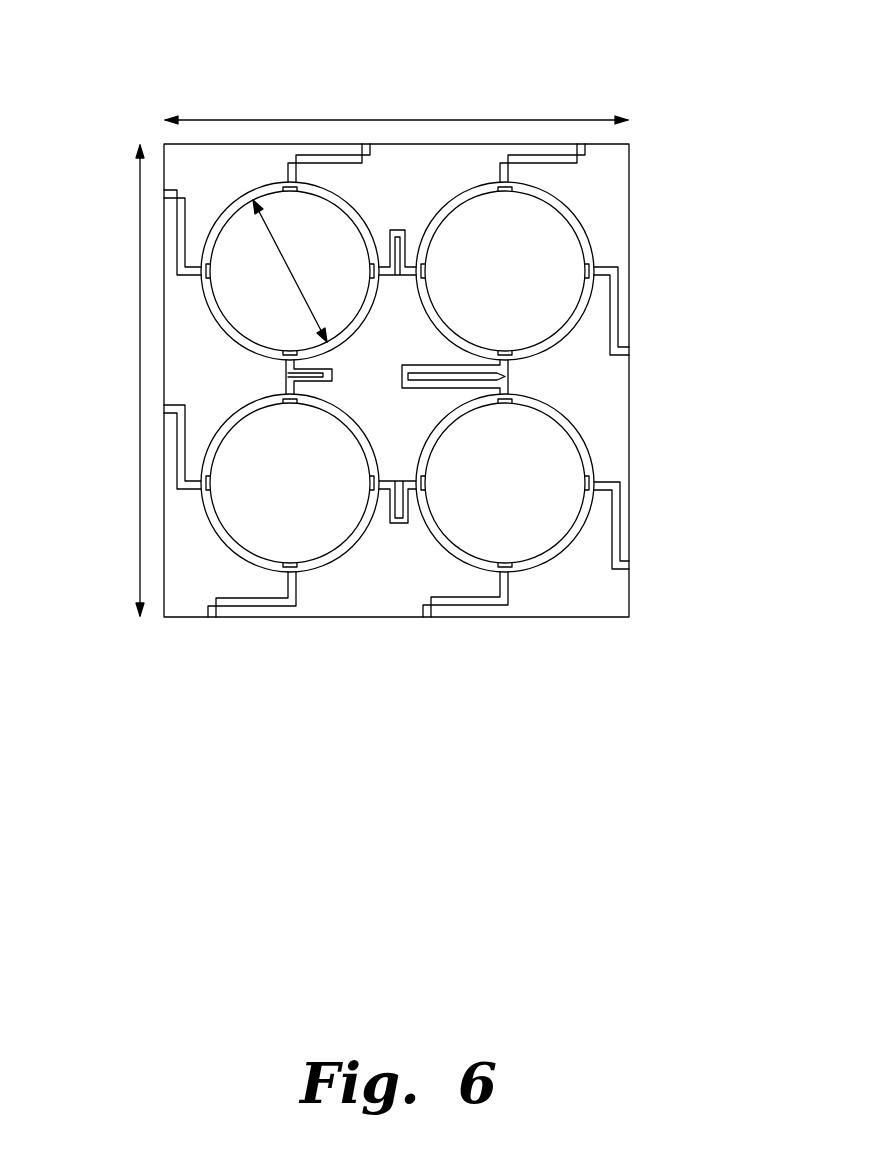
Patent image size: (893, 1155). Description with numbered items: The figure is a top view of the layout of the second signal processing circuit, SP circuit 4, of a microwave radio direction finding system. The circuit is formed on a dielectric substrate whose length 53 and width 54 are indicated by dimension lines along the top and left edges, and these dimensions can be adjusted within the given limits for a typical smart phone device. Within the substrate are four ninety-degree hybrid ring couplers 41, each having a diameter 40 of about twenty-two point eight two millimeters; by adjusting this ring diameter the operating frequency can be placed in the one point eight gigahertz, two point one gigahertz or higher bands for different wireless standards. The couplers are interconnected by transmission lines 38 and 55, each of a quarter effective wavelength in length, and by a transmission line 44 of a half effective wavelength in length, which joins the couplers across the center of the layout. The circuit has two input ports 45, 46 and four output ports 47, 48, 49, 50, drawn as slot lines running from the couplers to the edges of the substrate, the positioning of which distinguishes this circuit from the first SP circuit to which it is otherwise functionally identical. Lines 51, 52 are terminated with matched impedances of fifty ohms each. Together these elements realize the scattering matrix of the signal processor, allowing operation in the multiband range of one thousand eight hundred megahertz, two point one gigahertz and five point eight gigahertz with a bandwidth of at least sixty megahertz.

The SP circuit 4 is at (378, 562).
The transmission line 38 is at (397, 222).
The diameter 40 is at (297, 274).
The 90° hybrid ring coupler 41 is at (447, 427).
The transmission line 44 is at (520, 380).
The input port 45 is at (632, 562).
The input port 46 is at (164, 192).
The output port 47 is at (164, 409).
The output port 48 is at (631, 350).
The output port 49 is at (213, 620).
The output port 50 is at (585, 143).
The line 51 is at (428, 620).
The line 52 is at (367, 143).
The length of the dielectric substrate 53 is at (215, 128).
The width of the dielectric substrate 54 is at (138, 331).
The transmission line 55 is at (182, 194).